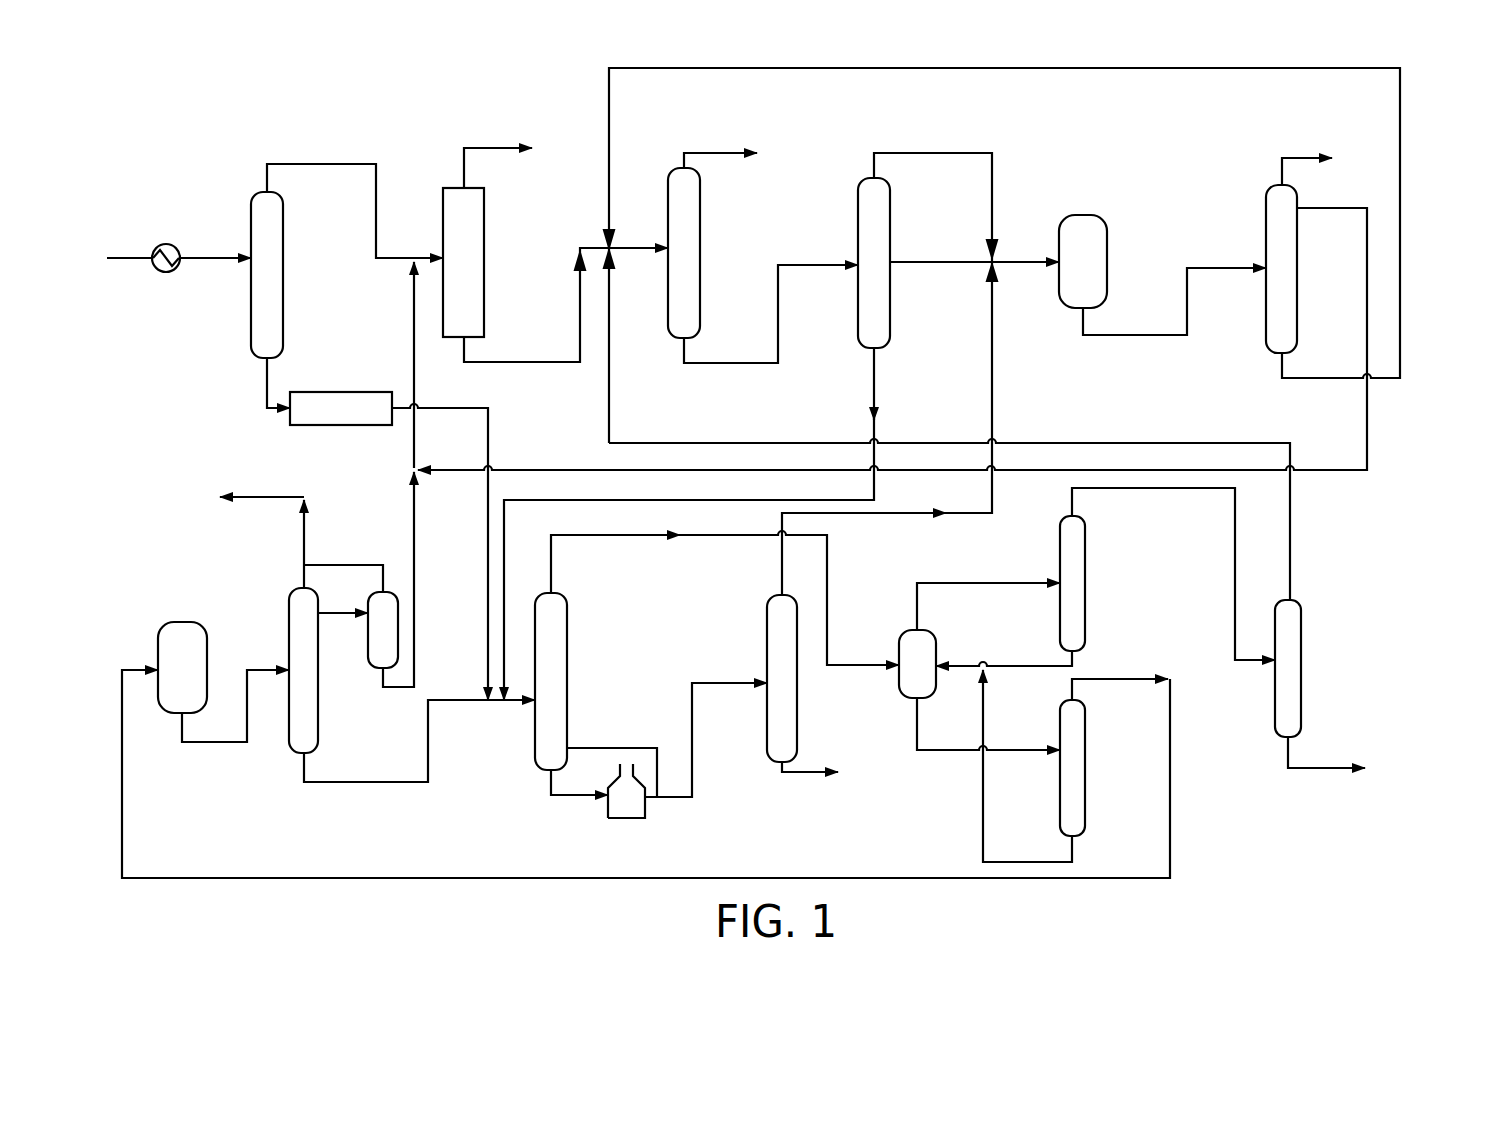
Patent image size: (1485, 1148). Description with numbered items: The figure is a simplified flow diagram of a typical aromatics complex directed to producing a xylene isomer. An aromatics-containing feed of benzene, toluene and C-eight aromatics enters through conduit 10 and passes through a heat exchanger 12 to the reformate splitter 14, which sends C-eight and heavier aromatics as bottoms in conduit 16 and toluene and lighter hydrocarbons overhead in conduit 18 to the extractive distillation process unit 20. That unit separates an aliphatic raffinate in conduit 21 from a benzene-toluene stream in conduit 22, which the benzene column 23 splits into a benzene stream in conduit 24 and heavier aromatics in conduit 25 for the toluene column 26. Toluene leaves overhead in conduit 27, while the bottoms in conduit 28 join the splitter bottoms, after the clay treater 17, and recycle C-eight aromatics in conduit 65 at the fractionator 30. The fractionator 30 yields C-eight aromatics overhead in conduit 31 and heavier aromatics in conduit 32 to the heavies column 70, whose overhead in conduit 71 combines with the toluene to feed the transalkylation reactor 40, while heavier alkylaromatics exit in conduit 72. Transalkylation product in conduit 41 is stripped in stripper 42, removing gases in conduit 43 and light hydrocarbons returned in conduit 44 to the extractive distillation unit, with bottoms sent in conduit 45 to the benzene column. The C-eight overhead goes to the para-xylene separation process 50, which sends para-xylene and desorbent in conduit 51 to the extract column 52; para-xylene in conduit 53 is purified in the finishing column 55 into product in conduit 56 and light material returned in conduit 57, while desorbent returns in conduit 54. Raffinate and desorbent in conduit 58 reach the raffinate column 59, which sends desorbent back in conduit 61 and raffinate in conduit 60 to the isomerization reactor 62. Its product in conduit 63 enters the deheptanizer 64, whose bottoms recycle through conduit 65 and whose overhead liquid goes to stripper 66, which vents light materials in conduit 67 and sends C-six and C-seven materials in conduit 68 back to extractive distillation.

The conduit 10 is at (123, 260).
The heat exchanger 12 is at (167, 272).
The reformate splitter 14 is at (283, 270).
The conduit 16 is at (267, 398).
The clay treater 17 is at (343, 392).
The conduit 18 is at (321, 164).
The extractive distillation process unit 20 is at (484, 258).
The conduit 21 is at (493, 148).
The conduit 22 is at (537, 362).
The benzene column 23 is at (700, 248).
The conduit 24 is at (716, 153).
The conduit 25 is at (733, 363).
The toluene column 26 is at (890, 262).
The conduit 27 is at (950, 153).
The conduit 28 is at (874, 395).
The fractionator 30 is at (567, 658).
The conduit 31 is at (614, 535).
The conduit 32 is at (675, 797).
The transalkylation reactor 40 is at (1107, 262).
The conduit 41 is at (1187, 302).
The stripper 42 is at (1297, 295).
The conduit 43 is at (1305, 158).
The conduit 44 is at (1365, 258).
The conduit 45 is at (828, 68).
The para-xylene separation process 50 is at (936, 648).
The conduit 51 is at (986, 583).
The extract column 52 is at (1085, 580).
The conduit 53 is at (1235, 558).
The conduit 54 is at (1072, 660).
The finishing column 55 is at (1301, 665).
The conduit 56 is at (1315, 768).
The conduit 57 is at (609, 395).
The conduit 58 is at (1020, 750).
The raffinate column 59 is at (1085, 780).
The conduit 60 is at (122, 823).
The conduit 61 is at (983, 815).
The isomerization reactor 62 is at (207, 650).
The conduit 63 is at (214, 742).
The deheptanizer 64 is at (318, 715).
The conduit 65 is at (366, 782).
The stripper 66 is at (340, 613).
The conduit 67 is at (262, 497).
The conduit 68 is at (414, 320).
The heavies column 70 is at (767, 648).
The conduit 71 is at (992, 375).
The conduit 72 is at (805, 772).